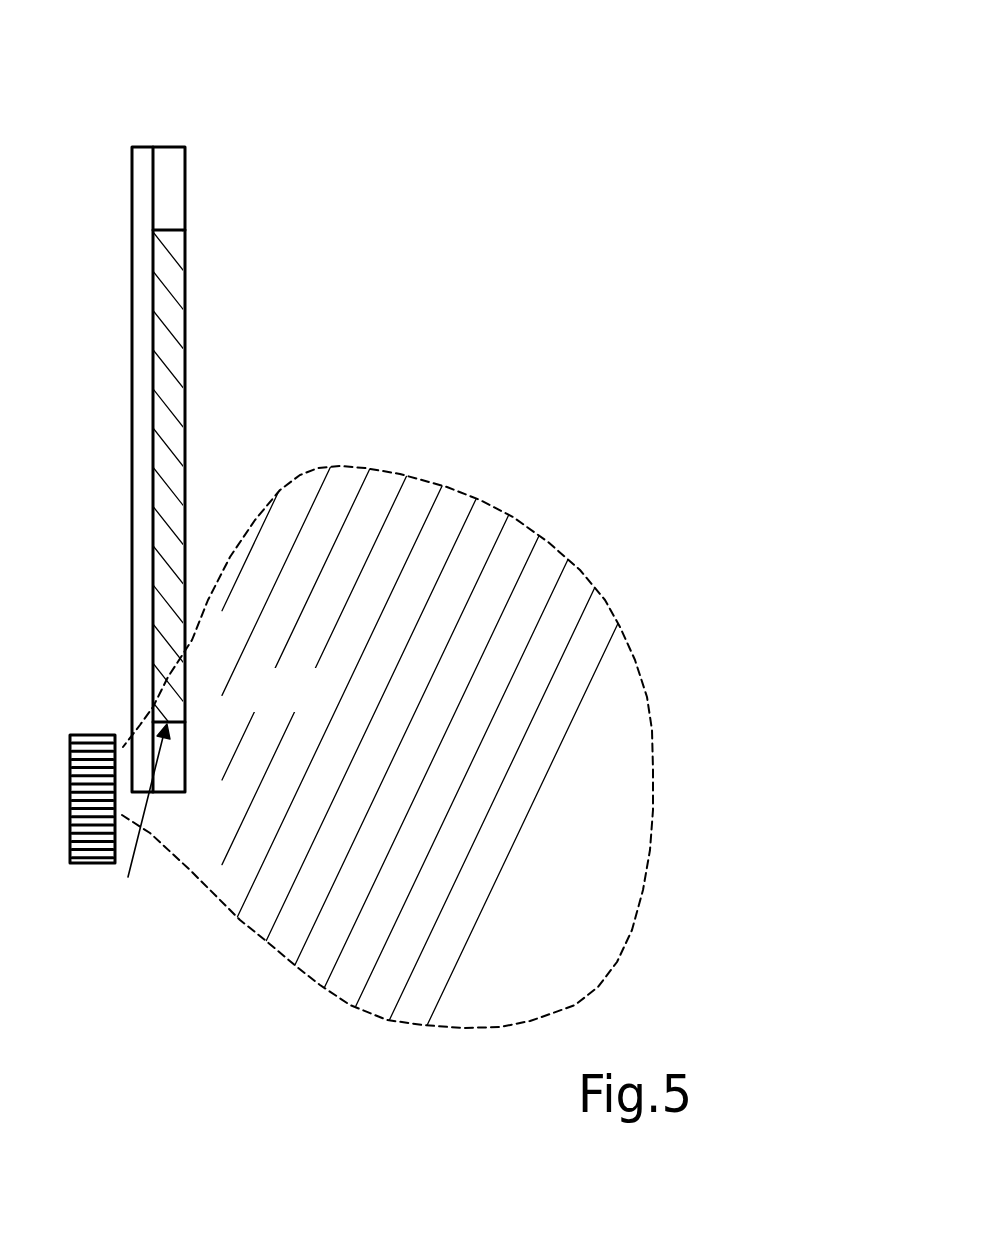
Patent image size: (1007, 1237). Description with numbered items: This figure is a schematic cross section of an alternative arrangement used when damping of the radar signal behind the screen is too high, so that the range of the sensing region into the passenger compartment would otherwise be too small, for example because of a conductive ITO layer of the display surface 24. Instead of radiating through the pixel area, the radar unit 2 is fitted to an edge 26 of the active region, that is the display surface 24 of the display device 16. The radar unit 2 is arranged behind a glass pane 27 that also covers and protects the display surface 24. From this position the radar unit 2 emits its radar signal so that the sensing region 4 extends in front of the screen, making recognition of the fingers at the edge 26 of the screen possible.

The radar unit 2 is at (90, 734).
The sensing region 4 is at (462, 490).
The display device 16 is at (168, 147).
The display surface 24 is at (198, 346).
The edge of the active region 26 is at (140, 821).
The glass pane 27 is at (178, 755).